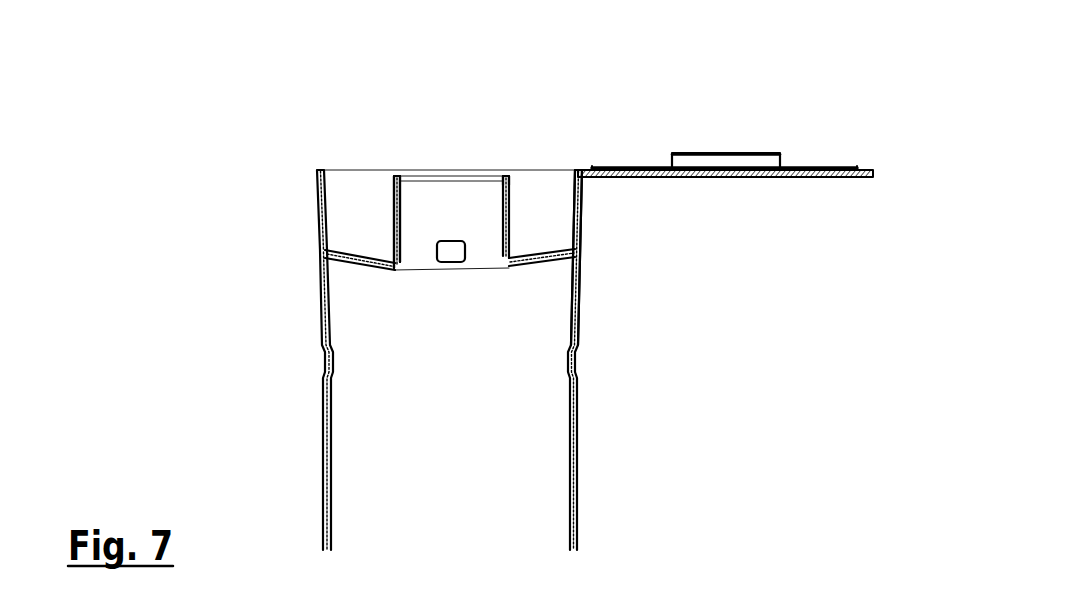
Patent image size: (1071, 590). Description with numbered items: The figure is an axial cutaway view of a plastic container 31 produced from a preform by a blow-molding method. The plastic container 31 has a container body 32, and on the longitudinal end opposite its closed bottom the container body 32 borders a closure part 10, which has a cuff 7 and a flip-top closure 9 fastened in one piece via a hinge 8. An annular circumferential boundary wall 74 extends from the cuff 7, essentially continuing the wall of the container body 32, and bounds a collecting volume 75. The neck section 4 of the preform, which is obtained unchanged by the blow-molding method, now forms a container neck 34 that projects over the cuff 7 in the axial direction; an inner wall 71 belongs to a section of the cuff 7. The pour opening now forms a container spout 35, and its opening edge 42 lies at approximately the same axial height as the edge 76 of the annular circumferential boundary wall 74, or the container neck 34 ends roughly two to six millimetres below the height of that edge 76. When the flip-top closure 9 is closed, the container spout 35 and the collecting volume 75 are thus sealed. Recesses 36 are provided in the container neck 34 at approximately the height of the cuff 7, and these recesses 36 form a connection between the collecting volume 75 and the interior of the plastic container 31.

The neck section 4 is at (438, 294).
The cuff 7 is at (348, 253).
The hinge 8 is at (584, 167).
The flip-top closure 9 is at (852, 165).
The closure part 10 is at (651, 235).
The plastic container 31 is at (176, 310).
The container body 32 is at (323, 440).
The container neck 34 is at (397, 211).
The container spout 35 is at (408, 192).
The recesses 36 is at (503, 250).
The opening edge 42 is at (507, 175).
The inner wall 71 is at (527, 252).
The annular circumferential boundary wall 74 is at (582, 220).
The collecting volume 75 is at (359, 190).
The edge 76 is at (316, 167).